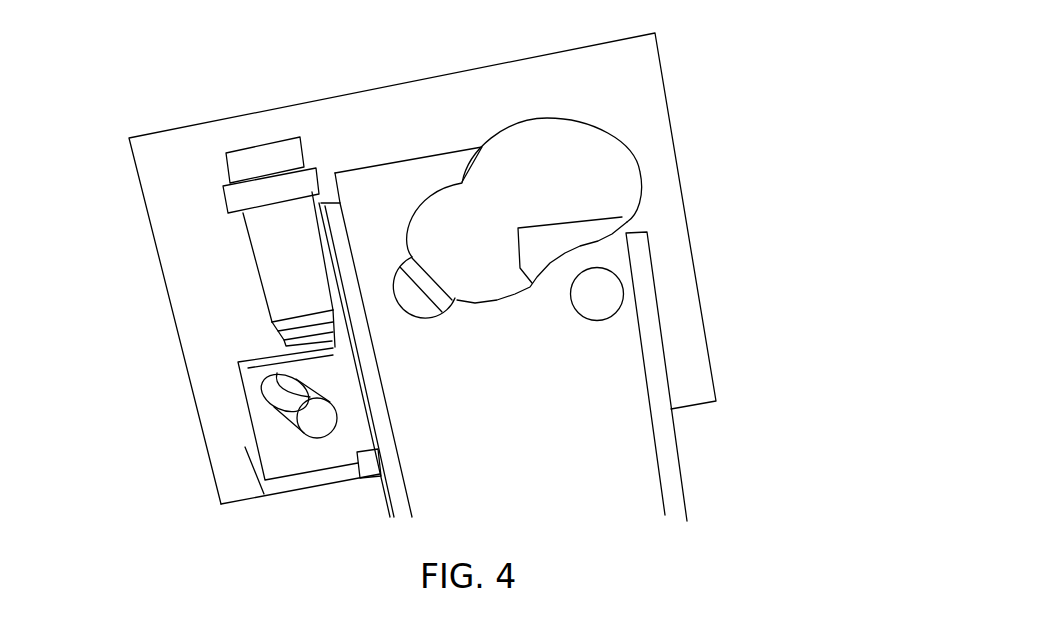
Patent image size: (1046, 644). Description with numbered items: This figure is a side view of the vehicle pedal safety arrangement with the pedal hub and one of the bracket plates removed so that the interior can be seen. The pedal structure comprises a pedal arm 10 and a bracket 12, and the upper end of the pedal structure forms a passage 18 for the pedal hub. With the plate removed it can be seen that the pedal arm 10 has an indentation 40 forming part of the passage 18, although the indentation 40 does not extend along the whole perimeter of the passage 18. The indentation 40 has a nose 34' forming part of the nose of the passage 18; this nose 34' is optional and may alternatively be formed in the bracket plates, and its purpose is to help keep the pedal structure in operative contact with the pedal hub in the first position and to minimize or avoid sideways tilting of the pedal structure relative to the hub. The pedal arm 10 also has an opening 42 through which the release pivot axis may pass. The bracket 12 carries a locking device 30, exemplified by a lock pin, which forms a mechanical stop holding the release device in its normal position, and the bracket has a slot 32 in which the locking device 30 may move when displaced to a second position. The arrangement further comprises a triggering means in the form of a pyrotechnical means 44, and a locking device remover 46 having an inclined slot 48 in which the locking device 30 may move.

The pedal arm 10 is at (489, 454).
The bracket 12 is at (686, 143).
The passage 18 is at (543, 200).
The locking device 30 is at (317, 423).
The slot 32 is at (245, 445).
The nose 34' is at (370, 115).
The indentation 40 is at (427, 266).
The opening 42 is at (599, 295).
The pyrotechnical means 44 is at (279, 242).
The locking device remover 46 is at (268, 430).
The inclined slot 48 is at (273, 428).